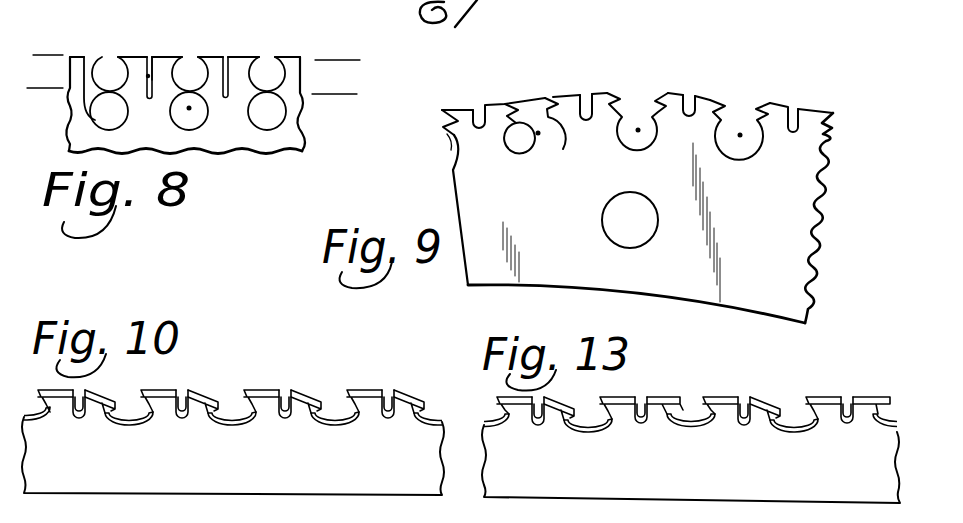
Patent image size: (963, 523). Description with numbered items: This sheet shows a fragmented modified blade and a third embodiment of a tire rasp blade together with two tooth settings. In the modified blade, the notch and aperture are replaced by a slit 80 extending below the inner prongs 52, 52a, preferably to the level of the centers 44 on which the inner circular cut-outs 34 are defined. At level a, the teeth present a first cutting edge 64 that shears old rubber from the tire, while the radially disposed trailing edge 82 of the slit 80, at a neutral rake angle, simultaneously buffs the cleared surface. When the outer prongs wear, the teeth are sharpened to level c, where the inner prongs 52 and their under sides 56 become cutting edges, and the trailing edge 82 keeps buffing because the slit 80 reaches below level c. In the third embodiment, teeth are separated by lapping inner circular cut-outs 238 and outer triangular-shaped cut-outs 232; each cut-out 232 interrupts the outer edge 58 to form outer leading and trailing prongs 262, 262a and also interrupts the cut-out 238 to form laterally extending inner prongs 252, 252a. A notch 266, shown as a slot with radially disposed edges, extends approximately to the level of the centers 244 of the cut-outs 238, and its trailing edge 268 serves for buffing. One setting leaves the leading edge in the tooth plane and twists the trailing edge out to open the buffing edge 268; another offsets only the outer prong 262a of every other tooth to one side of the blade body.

In FIG. 8, the centers 44 is at (189, 108).
In FIG. 8, the inner prong 52 is at (126, 78).
In FIG. 8, the inner prong 52a is at (83, 61).
In FIG. 8, the under side of inner prong 56 is at (270, 95).
In FIG. 8, the first cutting edge 64 is at (118, 60).
In FIG. 8, the slit 80 is at (150, 75).
In FIG. 8, the trailing edge of slit 82 is at (150, 77).
In FIG. 8, the level a is at (195, 58).
In FIG. 8, the level c is at (193, 92).
In FIG. 9, the inner circular cut-outs 34 is at (825, 111).
In FIG. 9, the outer edge of the teeth 58 is at (676, 92).
In FIG. 9, the outer triangular-shaped cut-out 232 is at (534, 76).
In FIG. 10, the outer triangular-shaped cut-out 232 is at (240, 383).
In FIG. 9, the inner circular cut-out 238 is at (536, 142).
In FIG. 10, the inner circular cut-out 238 is at (362, 399).
In FIG. 9, the centers of circular cut-outs 244 is at (638, 130).
In FIG. 9, the inner prong 252 is at (523, 150).
In FIG. 9, the inner prong 252a is at (447, 134).
In FIG. 13, the inner prong 252a is at (809, 447).
In FIG. 9, the outer leading prong 262 is at (450, 75).
In FIG. 9, the outer trailing prong 262a is at (530, 71).
In FIG. 13, the outer trailing prong 262a is at (747, 397).
In FIG. 9, the notch 266 is at (588, 90).
In FIG. 10, the notch 266 is at (150, 391).
In FIG. 13, the notch 266 is at (613, 398).
In FIG. 9, the trailing edge of notch 268 is at (793, 108).
In FIG. 10, the trailing edge of notch 268 is at (309, 393).